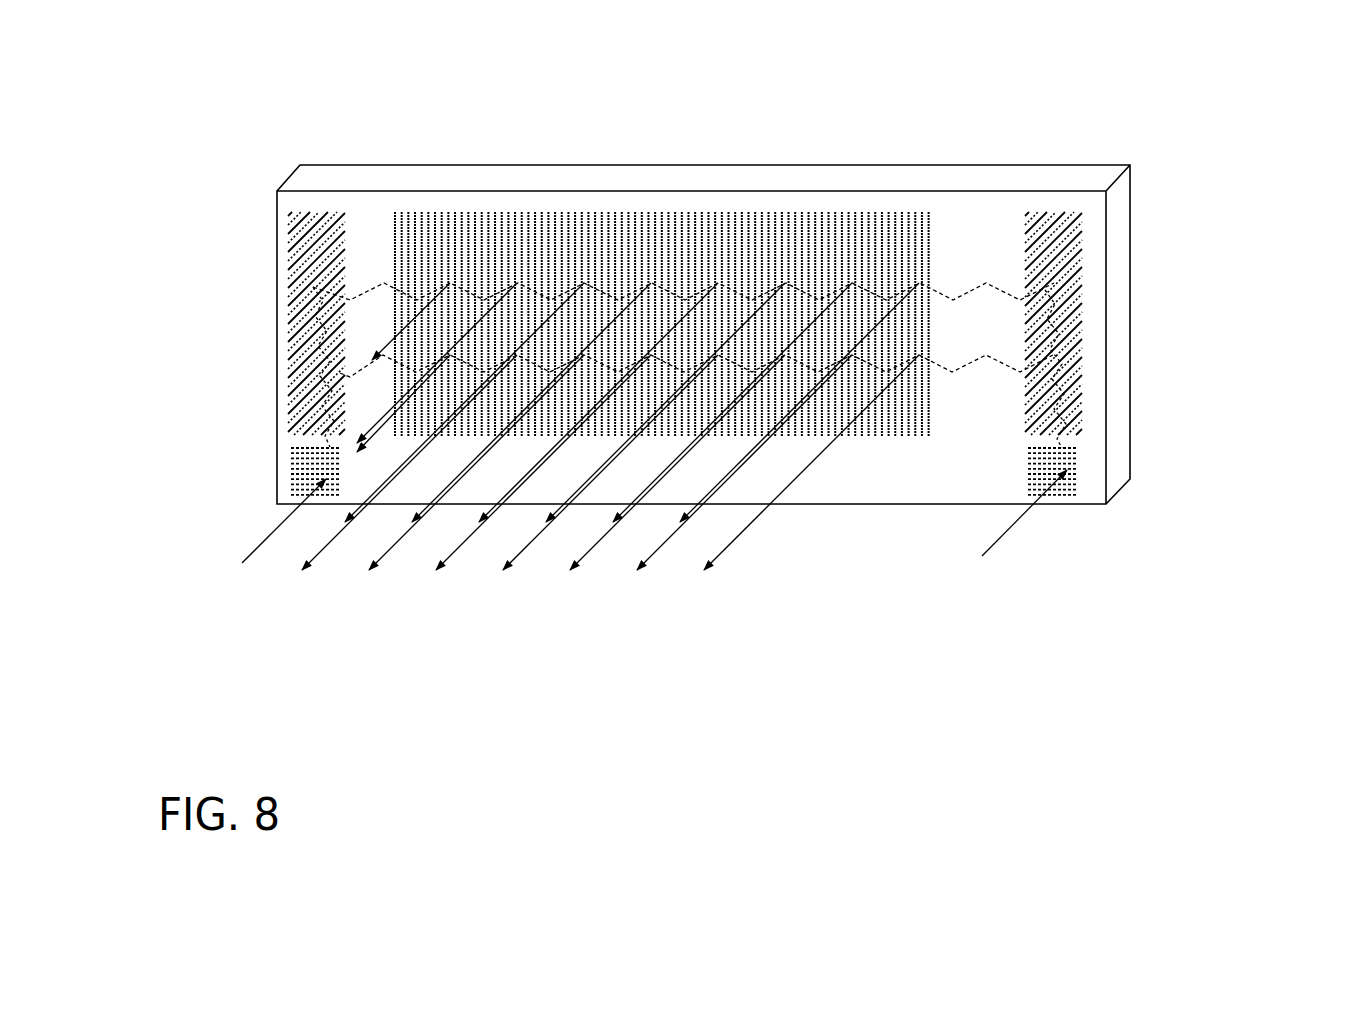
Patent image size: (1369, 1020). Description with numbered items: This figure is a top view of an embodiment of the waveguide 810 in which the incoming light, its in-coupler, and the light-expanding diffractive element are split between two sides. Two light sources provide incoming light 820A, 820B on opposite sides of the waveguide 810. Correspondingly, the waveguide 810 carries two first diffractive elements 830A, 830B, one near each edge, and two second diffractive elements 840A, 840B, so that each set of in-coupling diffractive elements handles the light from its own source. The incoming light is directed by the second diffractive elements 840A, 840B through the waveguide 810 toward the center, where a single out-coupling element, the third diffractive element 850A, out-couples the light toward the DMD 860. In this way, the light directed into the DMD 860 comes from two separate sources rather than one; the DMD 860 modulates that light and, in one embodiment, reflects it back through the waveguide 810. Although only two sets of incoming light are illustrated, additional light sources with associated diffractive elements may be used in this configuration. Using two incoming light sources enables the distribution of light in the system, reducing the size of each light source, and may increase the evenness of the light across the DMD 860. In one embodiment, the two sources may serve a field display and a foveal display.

The waveguide 810 is at (1134, 170).
The incoming light 820A is at (267, 524).
The incoming light 820B is at (1028, 540).
The first diffractive element 830A is at (283, 461).
The first diffractive element 830B is at (1085, 452).
The second diffractive element 840A is at (281, 260).
The second diffractive element 840B is at (1095, 243).
The third diffractive element 850A is at (853, 200).
The DMD 860 is at (740, 556).